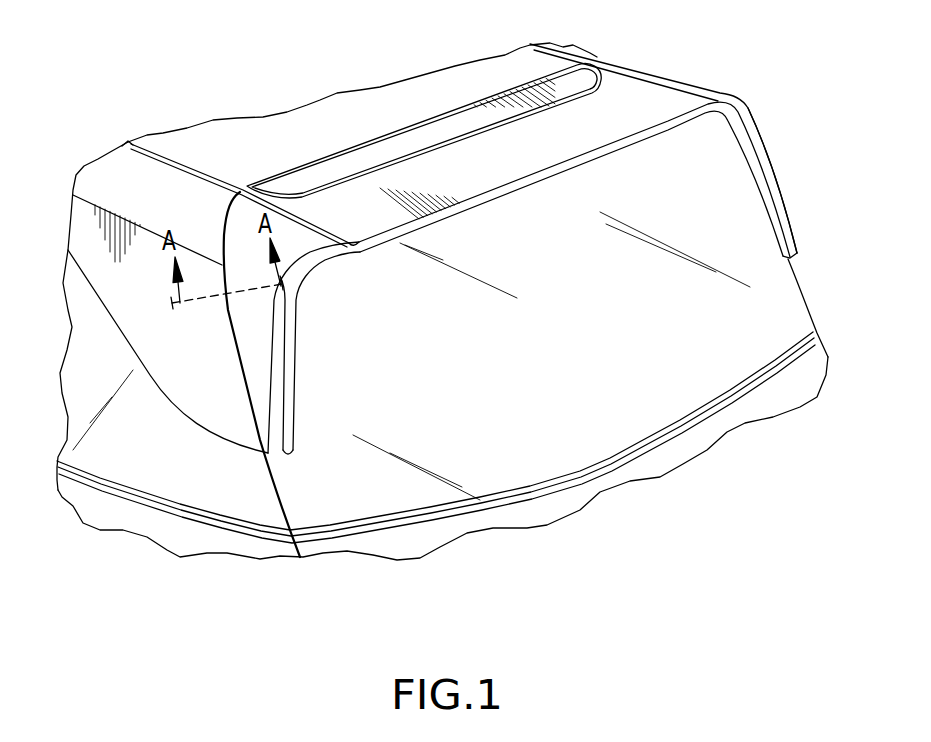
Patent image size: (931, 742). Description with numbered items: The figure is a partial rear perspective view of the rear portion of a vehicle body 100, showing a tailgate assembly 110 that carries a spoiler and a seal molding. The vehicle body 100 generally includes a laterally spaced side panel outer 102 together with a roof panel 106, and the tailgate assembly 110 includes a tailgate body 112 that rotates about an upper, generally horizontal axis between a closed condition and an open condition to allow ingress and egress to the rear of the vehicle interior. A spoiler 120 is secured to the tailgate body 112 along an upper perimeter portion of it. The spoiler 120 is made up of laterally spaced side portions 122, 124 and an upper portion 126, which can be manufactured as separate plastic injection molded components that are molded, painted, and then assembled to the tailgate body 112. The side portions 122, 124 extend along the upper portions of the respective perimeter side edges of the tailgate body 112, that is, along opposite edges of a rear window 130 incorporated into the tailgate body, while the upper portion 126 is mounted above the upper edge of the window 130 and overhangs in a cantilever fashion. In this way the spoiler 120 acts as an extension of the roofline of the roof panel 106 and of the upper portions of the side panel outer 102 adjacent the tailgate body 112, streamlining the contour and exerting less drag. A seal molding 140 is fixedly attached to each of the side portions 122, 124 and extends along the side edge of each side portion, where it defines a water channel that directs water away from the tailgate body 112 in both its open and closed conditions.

The vehicle body 100 is at (119, 129).
The side panel outer 102 is at (120, 447).
The roof panel 106 is at (308, 120).
The tailgate assembly 110 is at (460, 584).
The tailgate body 112 is at (673, 458).
The spoiler 120 is at (537, 198).
The side portion 122 is at (270, 373).
The side portion 124 is at (773, 163).
The upper portion 126 is at (493, 173).
The rear window 130 is at (778, 301).
The seal molding 140 is at (230, 327).